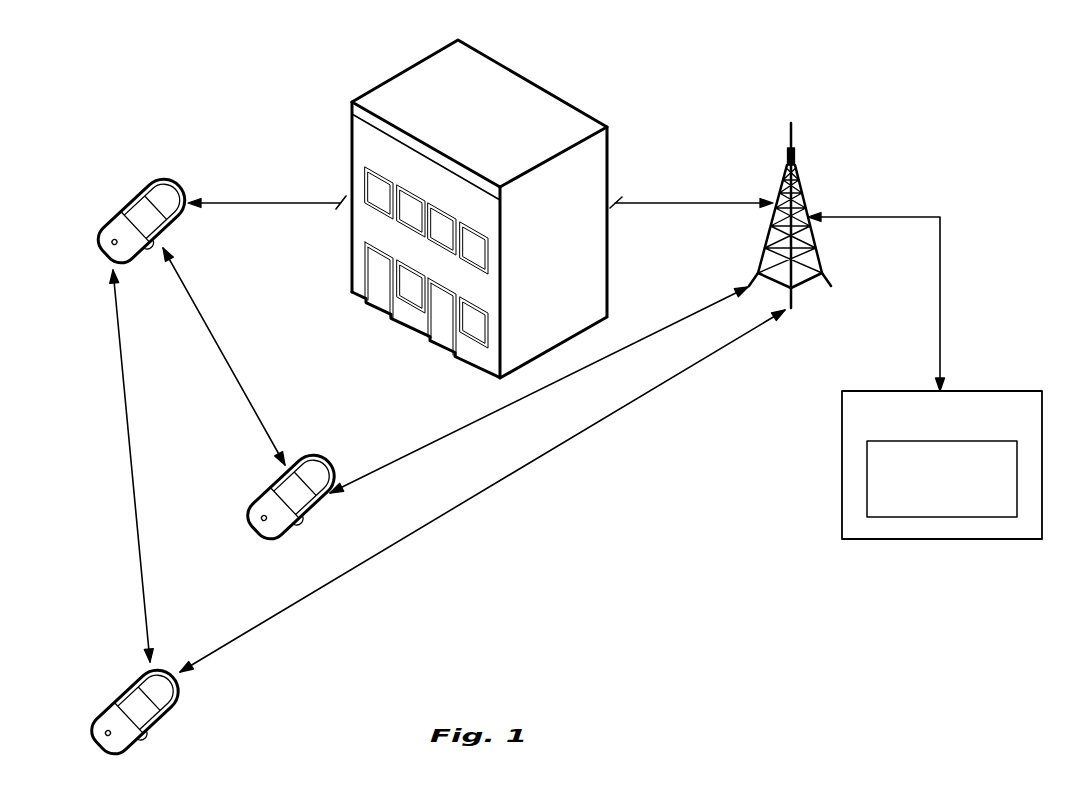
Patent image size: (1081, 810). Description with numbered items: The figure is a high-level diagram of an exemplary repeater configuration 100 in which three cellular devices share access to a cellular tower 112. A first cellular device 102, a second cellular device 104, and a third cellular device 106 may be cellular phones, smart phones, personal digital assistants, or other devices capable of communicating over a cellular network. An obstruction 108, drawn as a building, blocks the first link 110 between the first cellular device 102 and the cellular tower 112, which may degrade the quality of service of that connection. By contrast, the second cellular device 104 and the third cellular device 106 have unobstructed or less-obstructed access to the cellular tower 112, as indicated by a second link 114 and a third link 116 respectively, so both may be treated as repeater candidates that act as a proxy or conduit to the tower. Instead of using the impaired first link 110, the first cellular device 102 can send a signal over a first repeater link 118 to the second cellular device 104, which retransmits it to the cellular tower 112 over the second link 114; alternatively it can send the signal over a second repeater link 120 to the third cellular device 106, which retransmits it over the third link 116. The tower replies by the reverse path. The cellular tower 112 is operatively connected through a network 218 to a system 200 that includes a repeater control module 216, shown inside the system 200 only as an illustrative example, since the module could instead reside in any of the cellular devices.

The repeater configuration 100 is at (903, 65).
The first cellular device 102 is at (142, 185).
The second cellular device 104 is at (275, 493).
The third cellular device 106 is at (126, 700).
The obstruction 108 is at (507, 63).
The first link 110 is at (278, 206).
The cellular tower 112 is at (800, 175).
The second link 114 is at (423, 446).
The third link 116 is at (426, 524).
The first repeater link 118 is at (243, 386).
The second repeater link 120 is at (131, 447).
The system 200 is at (989, 425).
The repeater control module 216 is at (989, 501).
The network 218 is at (900, 217).